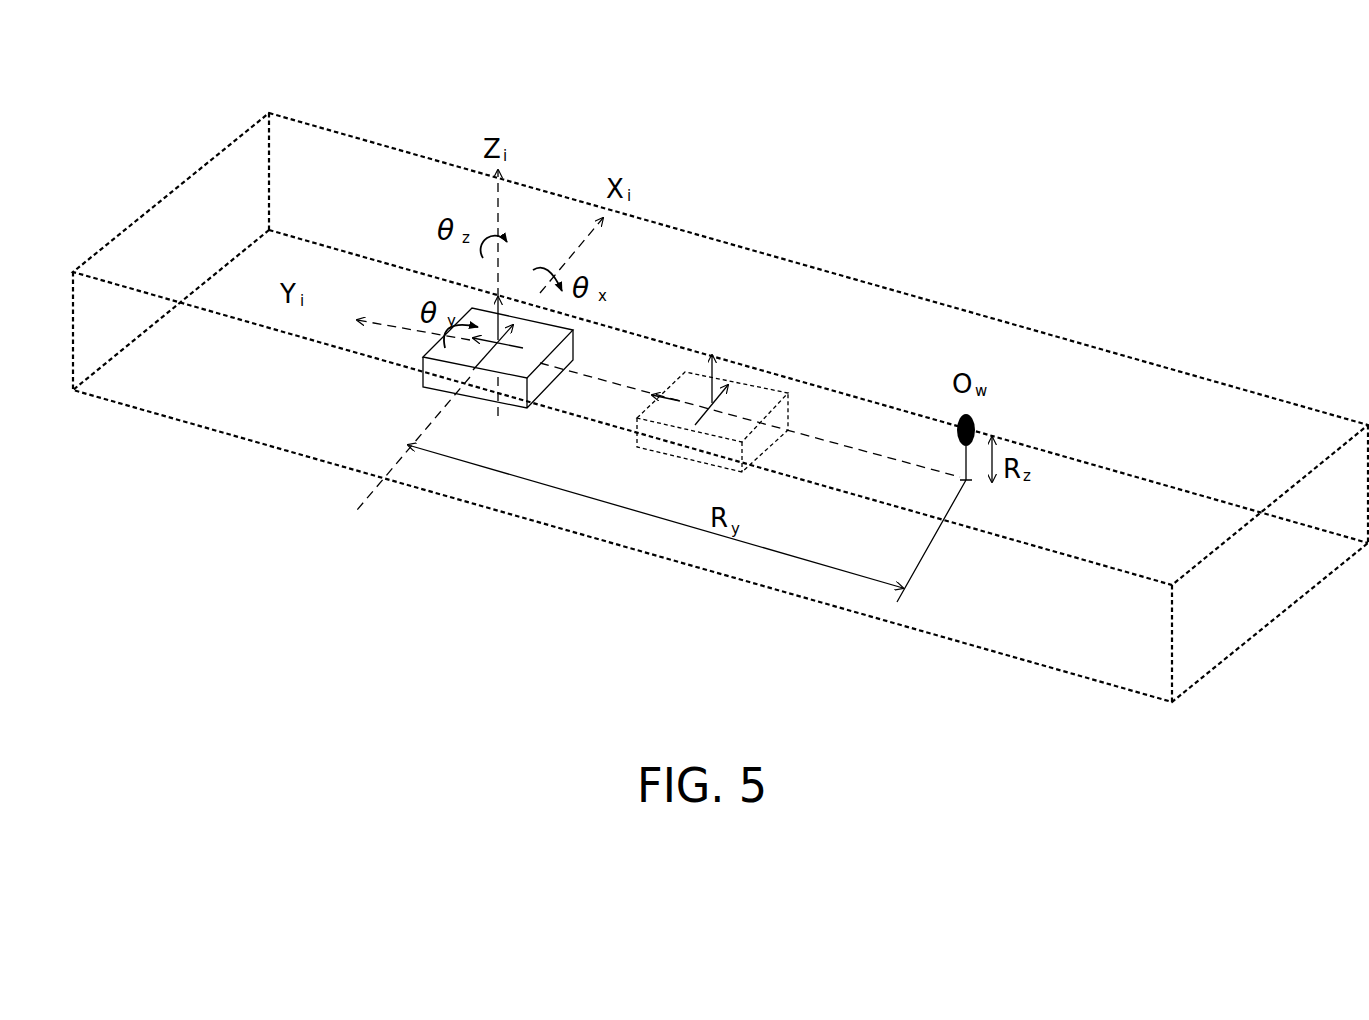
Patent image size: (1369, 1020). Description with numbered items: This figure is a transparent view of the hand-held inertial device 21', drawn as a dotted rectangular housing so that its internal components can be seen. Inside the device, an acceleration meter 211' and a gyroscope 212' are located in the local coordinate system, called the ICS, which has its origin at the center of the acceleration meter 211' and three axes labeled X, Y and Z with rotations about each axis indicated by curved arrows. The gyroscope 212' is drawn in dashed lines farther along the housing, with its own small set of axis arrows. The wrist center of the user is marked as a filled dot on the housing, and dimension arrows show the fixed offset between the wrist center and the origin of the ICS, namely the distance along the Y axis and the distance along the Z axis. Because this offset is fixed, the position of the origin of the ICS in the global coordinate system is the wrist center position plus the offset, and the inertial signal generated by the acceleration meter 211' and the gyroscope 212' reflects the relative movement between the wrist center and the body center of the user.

The hand-held inertial device 21' is at (720, 407).
The acceleration meter 211' is at (391, 413).
The gyroscope 212' is at (762, 324).